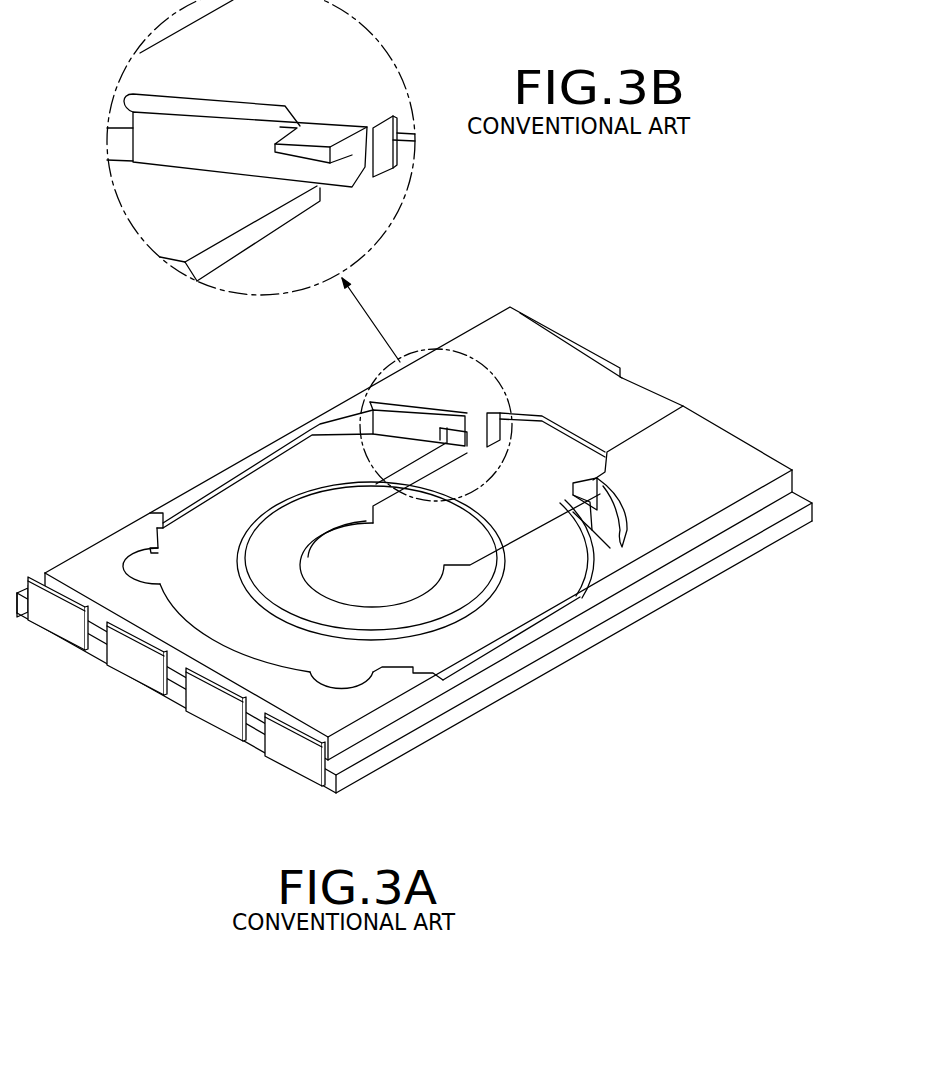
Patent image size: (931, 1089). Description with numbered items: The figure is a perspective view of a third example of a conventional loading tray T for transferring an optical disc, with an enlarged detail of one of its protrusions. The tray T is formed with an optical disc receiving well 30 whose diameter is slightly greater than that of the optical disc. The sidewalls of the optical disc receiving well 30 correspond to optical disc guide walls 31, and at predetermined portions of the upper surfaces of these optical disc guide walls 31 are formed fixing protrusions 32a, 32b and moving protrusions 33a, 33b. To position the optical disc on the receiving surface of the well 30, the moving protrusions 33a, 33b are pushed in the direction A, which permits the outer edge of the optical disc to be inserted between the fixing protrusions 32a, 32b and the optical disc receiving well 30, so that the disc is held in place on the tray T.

In FIG. 3A, the optical disc receiving well 30 is at (520, 613).
In FIG. 3A, the optical disc guide walls 31 is at (303, 432).
In FIG. 3A, the fixing protrusion 32a is at (398, 673).
In FIG. 3A, the fixing protrusion 32b is at (161, 522).
In FIG. 3A, the moving protrusion 33a is at (460, 425).
In FIG. 3B, the moving protrusion 33a is at (323, 160).
In FIG. 3A, the moving protrusion 33b is at (587, 493).
In FIG. 3A, the tray T is at (732, 412).
In FIG. 3B, the direction A is at (240, 130).